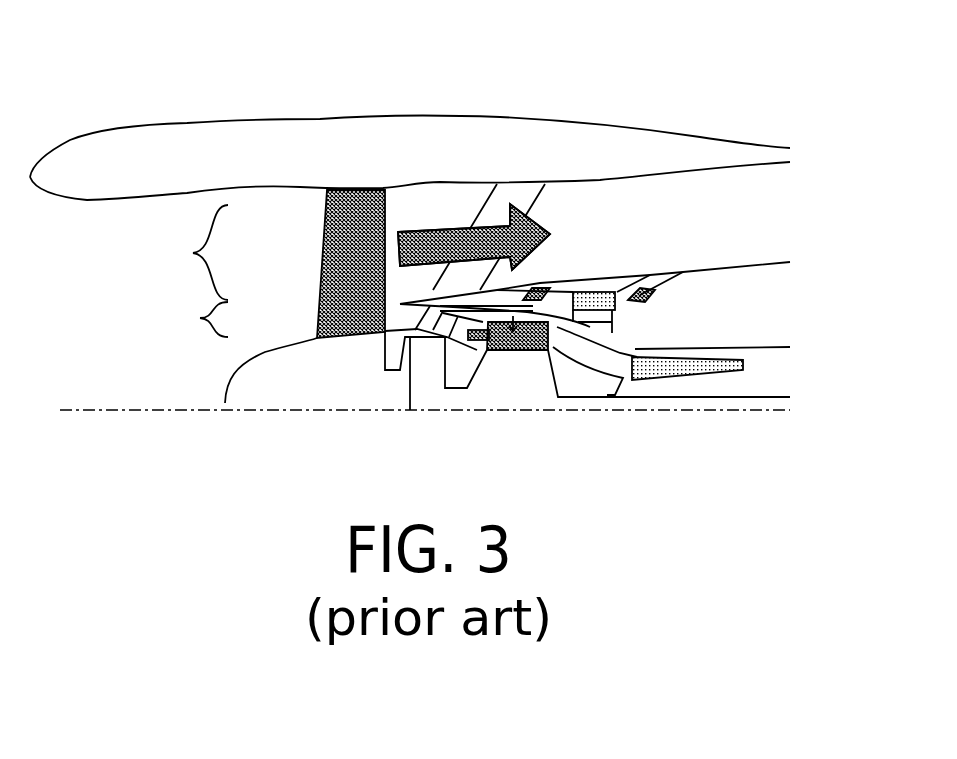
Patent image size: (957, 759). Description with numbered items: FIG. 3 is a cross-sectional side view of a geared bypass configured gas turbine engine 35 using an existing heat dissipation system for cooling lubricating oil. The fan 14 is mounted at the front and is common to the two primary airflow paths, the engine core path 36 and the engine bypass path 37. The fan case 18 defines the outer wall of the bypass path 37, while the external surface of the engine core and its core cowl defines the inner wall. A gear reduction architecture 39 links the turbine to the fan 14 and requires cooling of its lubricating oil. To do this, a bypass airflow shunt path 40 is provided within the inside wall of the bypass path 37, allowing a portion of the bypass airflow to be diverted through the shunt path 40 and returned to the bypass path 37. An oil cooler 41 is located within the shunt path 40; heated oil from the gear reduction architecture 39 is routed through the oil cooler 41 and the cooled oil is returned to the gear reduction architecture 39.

The bypass configured gas turbine engine 35 is at (662, 70).
The fan case 18 is at (447, 184).
The fan 14 is at (326, 250).
The engine bypass path 37 is at (192, 252).
The engine core path 36 is at (192, 319).
The gear reduction architecture 39 is at (427, 398).
The oil cooler 41 is at (590, 297).
The bypass airflow shunt path 40 is at (655, 277).